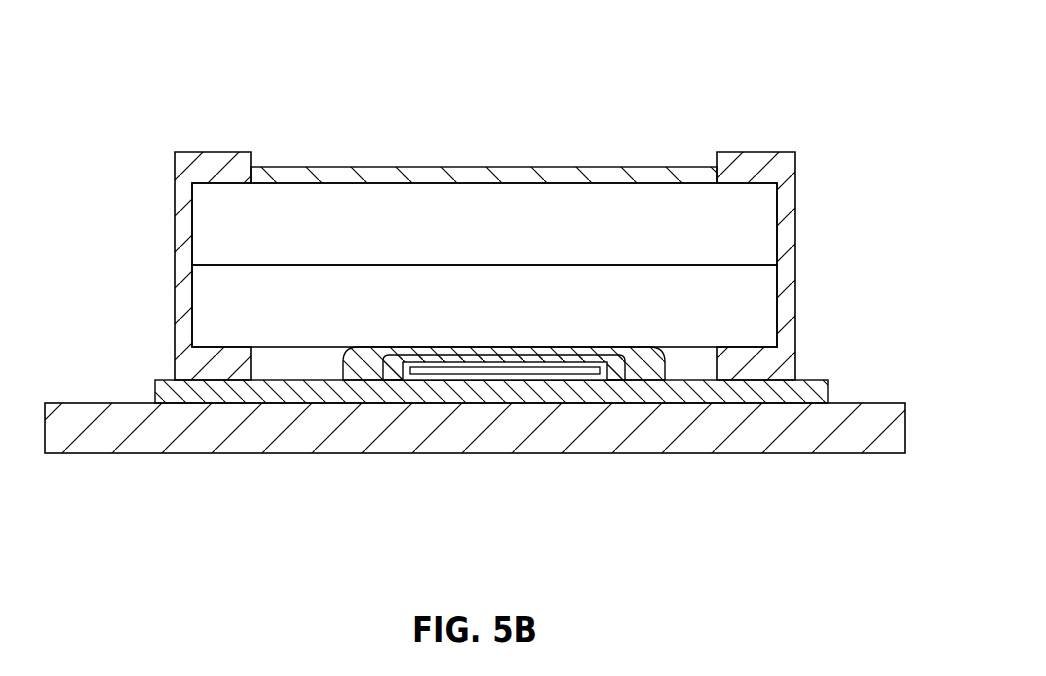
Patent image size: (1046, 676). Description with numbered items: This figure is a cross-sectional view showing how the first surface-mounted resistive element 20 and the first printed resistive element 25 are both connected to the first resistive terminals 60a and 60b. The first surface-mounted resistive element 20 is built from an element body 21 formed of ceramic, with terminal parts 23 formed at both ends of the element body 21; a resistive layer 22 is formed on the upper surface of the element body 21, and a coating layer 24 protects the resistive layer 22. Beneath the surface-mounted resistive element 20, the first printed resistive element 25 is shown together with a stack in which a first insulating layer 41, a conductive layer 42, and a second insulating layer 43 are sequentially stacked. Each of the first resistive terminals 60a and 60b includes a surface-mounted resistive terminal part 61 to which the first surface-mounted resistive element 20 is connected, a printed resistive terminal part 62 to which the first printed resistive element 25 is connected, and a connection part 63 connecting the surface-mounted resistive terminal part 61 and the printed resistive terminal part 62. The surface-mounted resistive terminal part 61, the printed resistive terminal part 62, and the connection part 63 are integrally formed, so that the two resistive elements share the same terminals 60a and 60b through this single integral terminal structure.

The first surface-mounted resistive element 20 is at (543, 226).
The element body 21 is at (735, 302).
The resistive layer 22 is at (682, 205).
The terminal parts 23 is at (778, 369).
The coating layer 24 is at (588, 168).
The first printed resistive element 25 is at (648, 370).
The first insulating layer 41 is at (567, 376).
The conductive layer 42 is at (500, 378).
The second insulating layer 43 is at (424, 376).
The first resistive terminal 60a is at (341, 513).
The first resistive terminal 60b is at (760, 395).
The surface-mounted resistive terminal part 61 is at (211, 396).
The printed resistive terminal part 62 is at (362, 397).
The connection part 63 is at (298, 384).